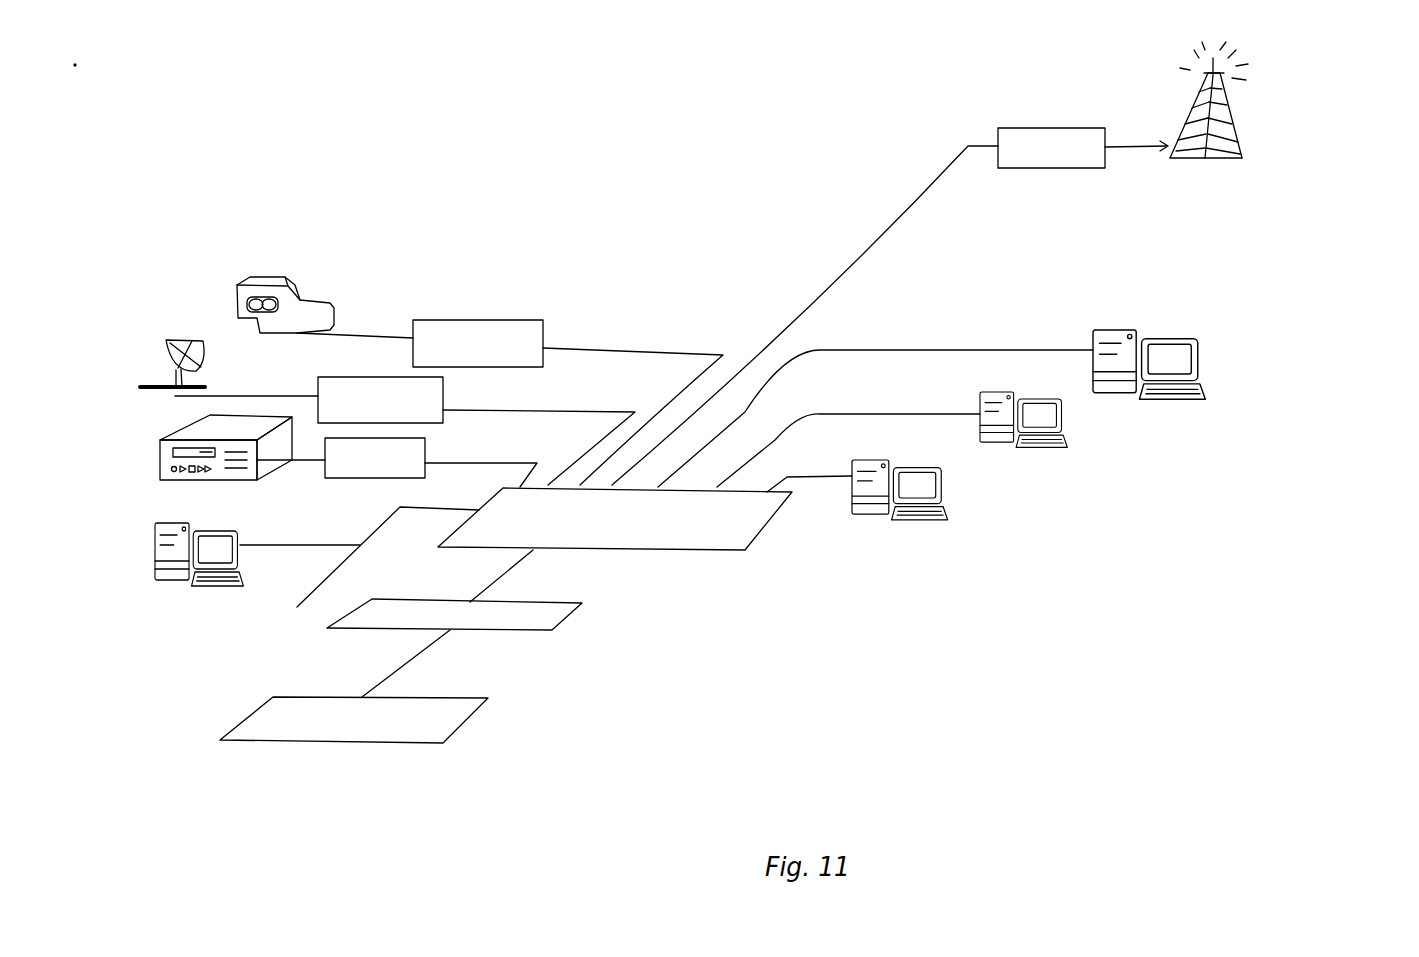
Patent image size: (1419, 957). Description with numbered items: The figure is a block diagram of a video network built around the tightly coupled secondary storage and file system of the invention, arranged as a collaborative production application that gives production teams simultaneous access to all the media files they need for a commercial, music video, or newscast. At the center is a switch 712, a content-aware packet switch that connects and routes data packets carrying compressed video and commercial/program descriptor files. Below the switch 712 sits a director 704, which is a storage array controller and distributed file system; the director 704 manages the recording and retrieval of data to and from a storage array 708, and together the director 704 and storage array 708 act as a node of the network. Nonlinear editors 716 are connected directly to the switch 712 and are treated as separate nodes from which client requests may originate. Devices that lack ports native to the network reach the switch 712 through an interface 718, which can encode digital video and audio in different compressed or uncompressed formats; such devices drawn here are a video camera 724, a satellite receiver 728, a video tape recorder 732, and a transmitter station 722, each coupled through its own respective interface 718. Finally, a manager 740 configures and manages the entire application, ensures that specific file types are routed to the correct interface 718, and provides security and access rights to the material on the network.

The director 704 is at (530, 632).
The storage array 708 is at (437, 745).
The switch 712 is at (700, 548).
The nonlinear editors 716 is at (1000, 494).
The interface 718 is at (543, 325).
The transmitter station 722 is at (1261, 118).
The video camera 724 is at (314, 291).
The satellite receiver 728 is at (165, 343).
The video tape recorder 732 is at (160, 447).
The manager 740 is at (155, 540).